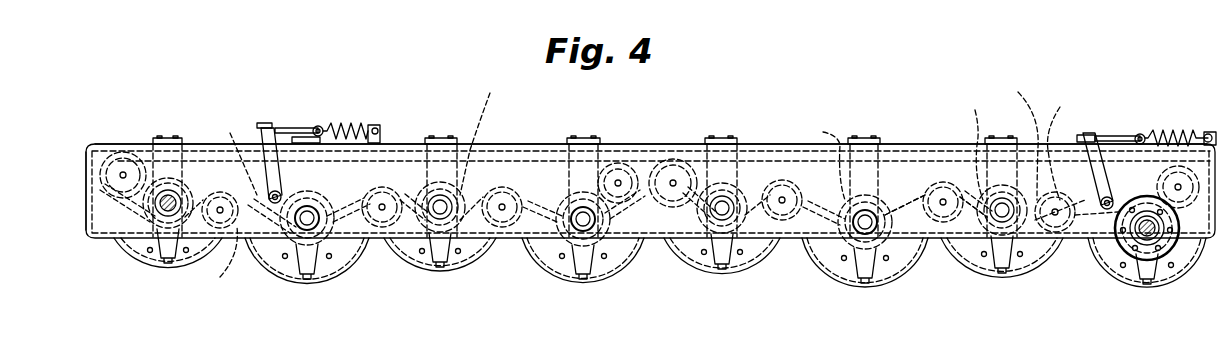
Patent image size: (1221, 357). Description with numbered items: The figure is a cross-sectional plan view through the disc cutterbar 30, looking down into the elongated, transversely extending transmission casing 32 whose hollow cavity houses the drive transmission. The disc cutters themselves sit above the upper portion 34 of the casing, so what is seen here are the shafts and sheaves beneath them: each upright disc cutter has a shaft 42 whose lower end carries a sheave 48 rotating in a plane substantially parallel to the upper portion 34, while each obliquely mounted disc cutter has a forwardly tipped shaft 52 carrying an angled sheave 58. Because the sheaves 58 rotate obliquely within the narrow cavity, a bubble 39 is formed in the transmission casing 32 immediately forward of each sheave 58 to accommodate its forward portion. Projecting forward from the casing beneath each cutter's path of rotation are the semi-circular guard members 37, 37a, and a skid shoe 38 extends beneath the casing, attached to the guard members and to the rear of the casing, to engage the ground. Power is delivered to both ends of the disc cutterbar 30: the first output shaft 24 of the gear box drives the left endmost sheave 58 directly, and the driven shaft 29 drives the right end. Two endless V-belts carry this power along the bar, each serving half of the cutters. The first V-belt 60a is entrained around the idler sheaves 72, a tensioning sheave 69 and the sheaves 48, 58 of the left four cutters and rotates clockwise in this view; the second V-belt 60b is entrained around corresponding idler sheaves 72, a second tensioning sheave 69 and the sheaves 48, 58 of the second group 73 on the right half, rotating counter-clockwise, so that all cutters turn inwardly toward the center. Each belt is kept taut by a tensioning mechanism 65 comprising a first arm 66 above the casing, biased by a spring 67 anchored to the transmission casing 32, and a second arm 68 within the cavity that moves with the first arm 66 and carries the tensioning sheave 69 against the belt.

The first output shaft 24 is at (1148, 236).
The driven shaft 29 is at (167, 200).
The disc cutterbar 30 is at (873, 92).
The transmission casing 32 is at (777, 146).
The upper portion 34 is at (533, 167).
The guard member 37 is at (150, 263).
The guard member 37a is at (332, 277).
The skid shoe 38 is at (438, 140).
The bubble 39 is at (300, 257).
The shaft 42 is at (440, 208).
The sheave 48 is at (721, 139).
The shaft 52 is at (563, 263).
The sheave 58 is at (820, 158).
The first V-belt 60a is at (932, 240).
The second V-belt 60b is at (640, 235).
The tensioning mechanism 65 is at (238, 92).
The first arm 66 is at (264, 123).
The spring 67 is at (343, 126).
The second arm 68 is at (645, 144).
The tensioning sheave 69 is at (616, 182).
The idler sheave 72 is at (118, 143).
The second group 73 is at (400, 103).